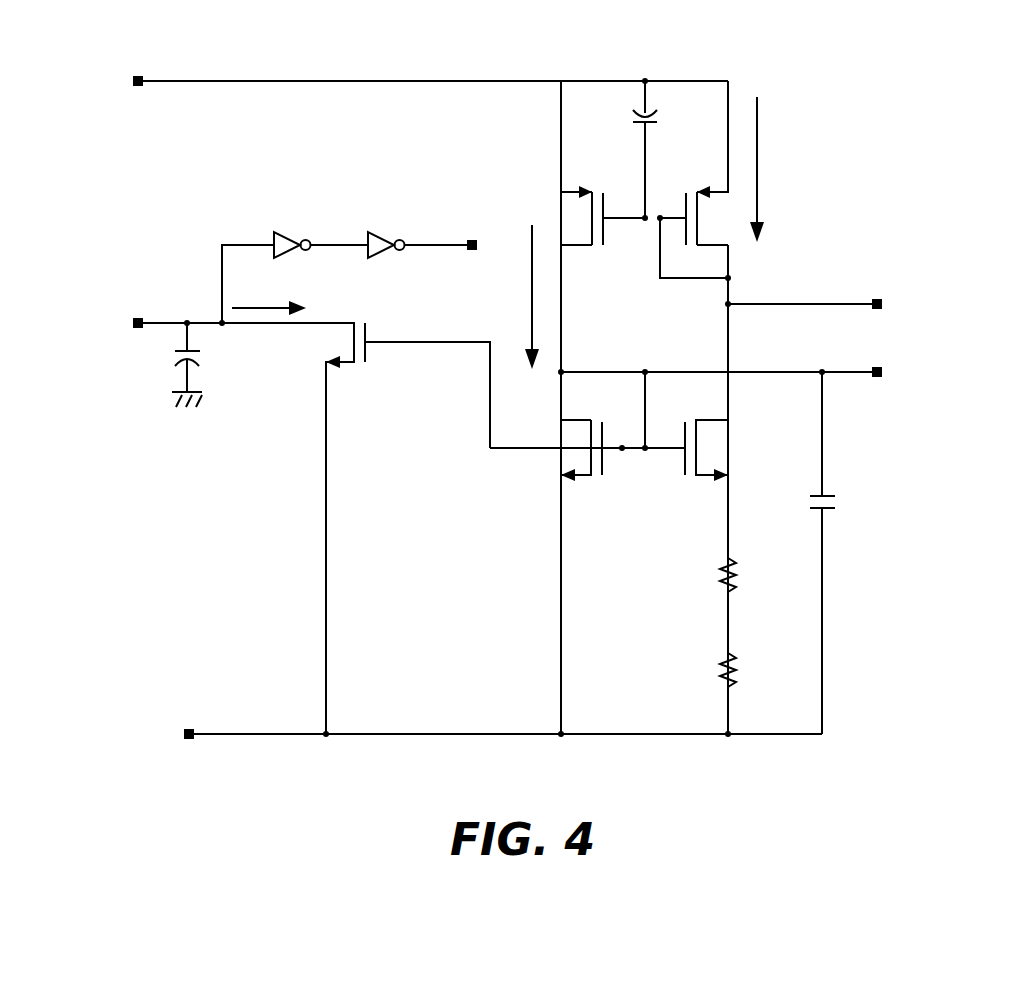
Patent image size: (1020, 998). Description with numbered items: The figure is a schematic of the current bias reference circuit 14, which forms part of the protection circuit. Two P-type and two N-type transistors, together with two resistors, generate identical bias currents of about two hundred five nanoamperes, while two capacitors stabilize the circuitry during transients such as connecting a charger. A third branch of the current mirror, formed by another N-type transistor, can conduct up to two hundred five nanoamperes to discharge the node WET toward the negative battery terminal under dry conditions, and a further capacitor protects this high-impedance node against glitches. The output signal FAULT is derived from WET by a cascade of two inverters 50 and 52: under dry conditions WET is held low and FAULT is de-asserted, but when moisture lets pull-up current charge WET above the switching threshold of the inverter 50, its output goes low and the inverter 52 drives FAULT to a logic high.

The current bias reference circuit 14 is at (767, 70).
The inverter 50 is at (290, 231).
The inverter 52 is at (382, 231).